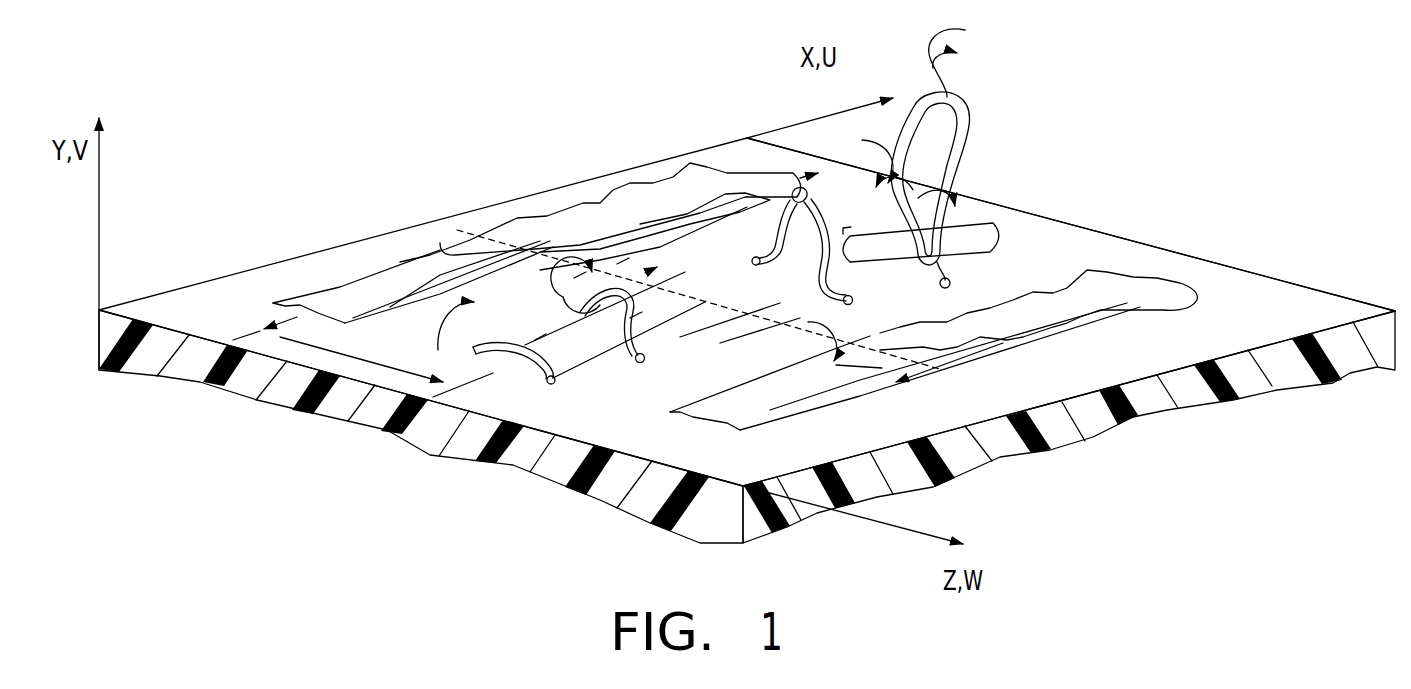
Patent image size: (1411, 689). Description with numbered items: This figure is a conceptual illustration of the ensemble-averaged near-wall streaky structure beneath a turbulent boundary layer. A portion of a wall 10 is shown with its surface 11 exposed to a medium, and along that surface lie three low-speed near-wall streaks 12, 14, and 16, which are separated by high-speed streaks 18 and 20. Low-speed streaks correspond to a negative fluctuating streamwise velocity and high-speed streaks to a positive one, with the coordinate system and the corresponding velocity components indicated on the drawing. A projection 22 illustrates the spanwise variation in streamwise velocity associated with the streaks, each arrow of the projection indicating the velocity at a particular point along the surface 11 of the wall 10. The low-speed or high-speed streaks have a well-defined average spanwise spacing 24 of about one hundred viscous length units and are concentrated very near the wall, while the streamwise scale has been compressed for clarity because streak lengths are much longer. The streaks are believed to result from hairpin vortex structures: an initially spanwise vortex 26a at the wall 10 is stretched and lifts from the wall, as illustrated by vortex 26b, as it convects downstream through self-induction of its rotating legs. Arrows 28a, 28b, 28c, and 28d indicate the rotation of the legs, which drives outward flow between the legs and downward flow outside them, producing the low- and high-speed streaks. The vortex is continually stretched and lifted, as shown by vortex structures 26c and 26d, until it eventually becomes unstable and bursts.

The wall 10 is at (517, 454).
The surface 11 is at (179, 277).
The low-speed near-wall streak 12 is at (582, 215).
The low-speed near-wall streak 14 is at (1000, 226).
The low-speed near-wall streak 16 is at (1180, 289).
The high-speed streak 18 is at (405, 332).
The high-speed streak 20 is at (1101, 240).
The projection 22 is at (440, 243).
The average spanwise spacing 24 is at (297, 405).
The spanwise vortex 26a is at (505, 365).
The vortex 26b is at (622, 362).
The vortex structure 26c is at (790, 245).
The vortex structure 26d is at (970, 132).
The arrow 28a is at (440, 335).
The arrow 28b is at (563, 280).
The arrow 28c is at (836, 303).
The arrow 28d is at (912, 111).